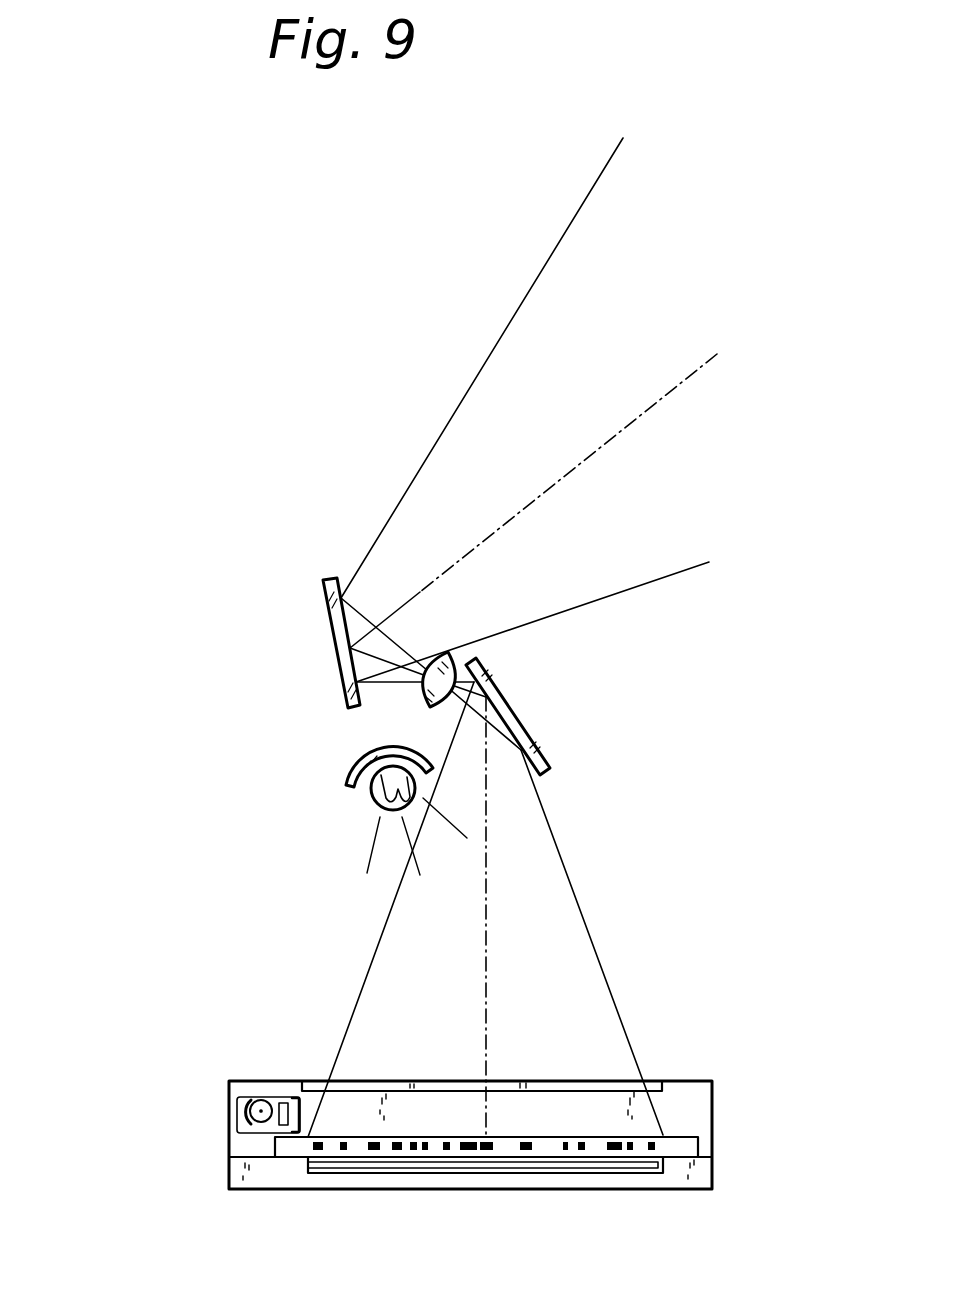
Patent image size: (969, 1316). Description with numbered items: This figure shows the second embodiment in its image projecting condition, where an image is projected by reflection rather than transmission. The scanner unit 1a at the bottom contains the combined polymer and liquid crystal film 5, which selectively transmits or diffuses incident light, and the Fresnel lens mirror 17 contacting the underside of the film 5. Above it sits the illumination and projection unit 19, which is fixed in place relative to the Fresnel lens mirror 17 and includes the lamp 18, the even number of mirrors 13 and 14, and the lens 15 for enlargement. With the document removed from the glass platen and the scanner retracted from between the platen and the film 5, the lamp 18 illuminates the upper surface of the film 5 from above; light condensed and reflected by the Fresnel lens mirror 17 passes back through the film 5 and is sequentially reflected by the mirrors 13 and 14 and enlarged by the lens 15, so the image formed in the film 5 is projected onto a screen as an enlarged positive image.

The scanner unit 1a is at (557, 1198).
The combined polymer and liquid crystal film 5 is at (515, 1137).
The mirror 13 is at (515, 712).
The mirror 14 is at (330, 621).
The lens 15 is at (430, 698).
The Fresnel lens mirror 17 is at (455, 1177).
The lamp 18 is at (376, 800).
The illumination and projection unit 19 is at (208, 773).